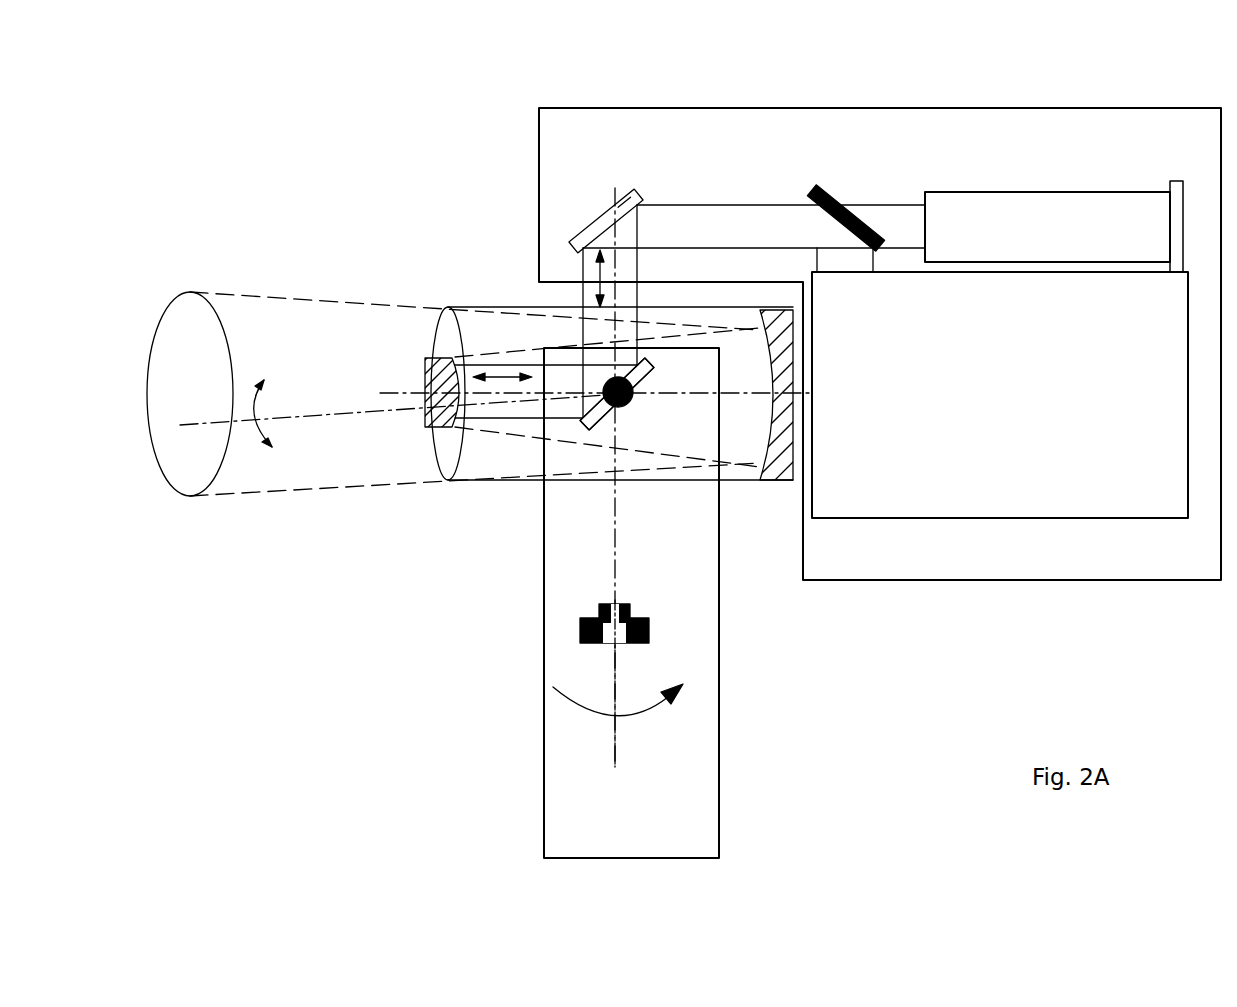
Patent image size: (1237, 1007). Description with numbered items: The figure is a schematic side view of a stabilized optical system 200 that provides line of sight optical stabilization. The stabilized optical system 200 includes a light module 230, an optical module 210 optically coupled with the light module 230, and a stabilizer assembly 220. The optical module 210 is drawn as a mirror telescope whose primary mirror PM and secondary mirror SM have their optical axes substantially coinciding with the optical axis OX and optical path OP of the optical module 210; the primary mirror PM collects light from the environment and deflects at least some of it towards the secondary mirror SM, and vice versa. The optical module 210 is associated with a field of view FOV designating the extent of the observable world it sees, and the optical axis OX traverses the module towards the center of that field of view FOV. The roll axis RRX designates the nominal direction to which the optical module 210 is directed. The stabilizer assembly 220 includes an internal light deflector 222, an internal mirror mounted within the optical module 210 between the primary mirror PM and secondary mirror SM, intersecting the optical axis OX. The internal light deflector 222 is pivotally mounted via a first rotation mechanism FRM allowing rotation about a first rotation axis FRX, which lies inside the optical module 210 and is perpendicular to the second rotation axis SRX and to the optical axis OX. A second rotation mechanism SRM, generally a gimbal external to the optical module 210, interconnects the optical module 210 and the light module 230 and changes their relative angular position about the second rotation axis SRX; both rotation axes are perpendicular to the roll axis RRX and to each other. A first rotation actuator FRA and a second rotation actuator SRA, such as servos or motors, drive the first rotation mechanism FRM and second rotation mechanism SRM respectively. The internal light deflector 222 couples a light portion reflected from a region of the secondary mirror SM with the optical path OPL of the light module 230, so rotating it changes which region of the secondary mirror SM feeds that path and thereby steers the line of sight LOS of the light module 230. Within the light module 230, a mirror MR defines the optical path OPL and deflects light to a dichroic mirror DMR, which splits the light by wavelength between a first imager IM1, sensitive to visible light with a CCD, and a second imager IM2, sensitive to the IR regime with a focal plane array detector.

The stabilized optical system 200 is at (321, 122).
The optical module 210 is at (500, 482).
The stabilizer assembly 220 is at (670, 823).
The internal light deflector 222 is at (641, 382).
The light module 230 is at (1110, 160).
The field of view FOV is at (190, 290).
The line of sight LOS is at (393, 413).
The roll axis RRX is at (493, 391).
The secondary mirror SM is at (417, 405).
The second rotation mechanism SRM is at (597, 373).
The optical path OP is at (503, 373).
The optical path of the light module OPL is at (581, 256).
The mirror MR is at (640, 192).
The dichroic mirror DMR is at (838, 200).
The first imager IM1 is at (1054, 226).
The second imager IM2 is at (1000, 395).
The optical axis OX is at (596, 382).
The second rotation axis SRX is at (603, 420).
The second rotation actuator SRA is at (622, 406).
The primary mirror PM is at (784, 460).
The first rotation mechanism FRM is at (566, 654).
The first rotation actuator FRA is at (638, 645).
The first rotation axis FRX is at (613, 676).